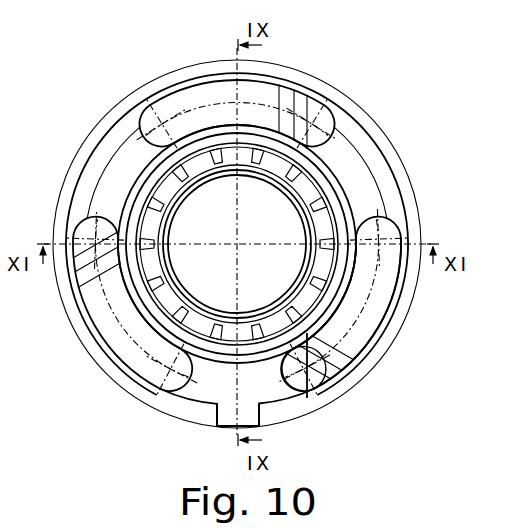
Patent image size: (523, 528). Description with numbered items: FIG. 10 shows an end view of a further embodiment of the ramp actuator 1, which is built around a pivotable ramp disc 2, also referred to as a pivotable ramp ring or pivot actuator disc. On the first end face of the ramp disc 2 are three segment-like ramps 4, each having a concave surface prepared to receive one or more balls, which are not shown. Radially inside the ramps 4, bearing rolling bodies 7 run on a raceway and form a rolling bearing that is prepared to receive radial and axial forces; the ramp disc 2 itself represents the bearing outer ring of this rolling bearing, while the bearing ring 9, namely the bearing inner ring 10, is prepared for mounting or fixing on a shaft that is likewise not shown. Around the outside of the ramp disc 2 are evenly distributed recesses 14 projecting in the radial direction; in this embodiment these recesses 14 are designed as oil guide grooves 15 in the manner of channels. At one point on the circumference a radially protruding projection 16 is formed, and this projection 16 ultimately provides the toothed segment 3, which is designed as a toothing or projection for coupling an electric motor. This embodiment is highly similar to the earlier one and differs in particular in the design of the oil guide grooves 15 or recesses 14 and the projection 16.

The ramp actuator 1 is at (393, 106).
The ramp disc 2 is at (352, 160).
The toothed segment 3 is at (248, 414).
The ramp 4 is at (386, 273).
The bearing rolling bodies 7 is at (388, 345).
The bearing ring 9 is at (100, 160).
The bearing inner ring 10 is at (100, 160).
The recesses 14 is at (400, 168).
The oil guide grooves 15 is at (400, 168).
The projection 16 is at (248, 414).